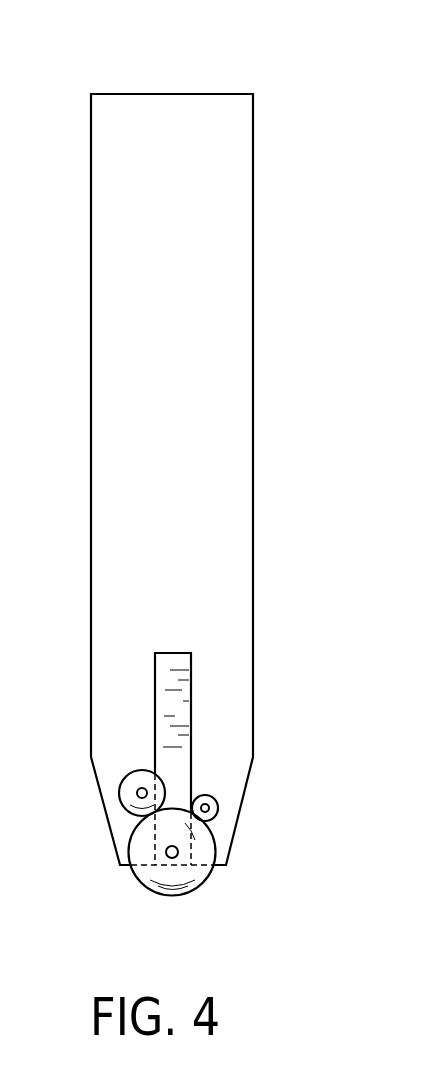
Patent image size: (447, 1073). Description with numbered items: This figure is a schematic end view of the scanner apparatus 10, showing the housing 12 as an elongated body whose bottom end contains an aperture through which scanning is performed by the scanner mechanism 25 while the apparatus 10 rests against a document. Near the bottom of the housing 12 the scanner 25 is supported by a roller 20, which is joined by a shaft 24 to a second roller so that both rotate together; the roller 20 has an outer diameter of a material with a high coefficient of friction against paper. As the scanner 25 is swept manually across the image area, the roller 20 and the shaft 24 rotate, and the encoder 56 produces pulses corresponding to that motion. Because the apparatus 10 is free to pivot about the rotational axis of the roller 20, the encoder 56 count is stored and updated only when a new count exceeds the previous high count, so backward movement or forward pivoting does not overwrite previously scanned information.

The scanner apparatus 10 is at (160, 76).
The housing 12 is at (110, 262).
The scanner mechanism 25 is at (148, 699).
The encoder 56 is at (121, 808).
The shaft 24 is at (210, 796).
The roller 20 is at (152, 891).